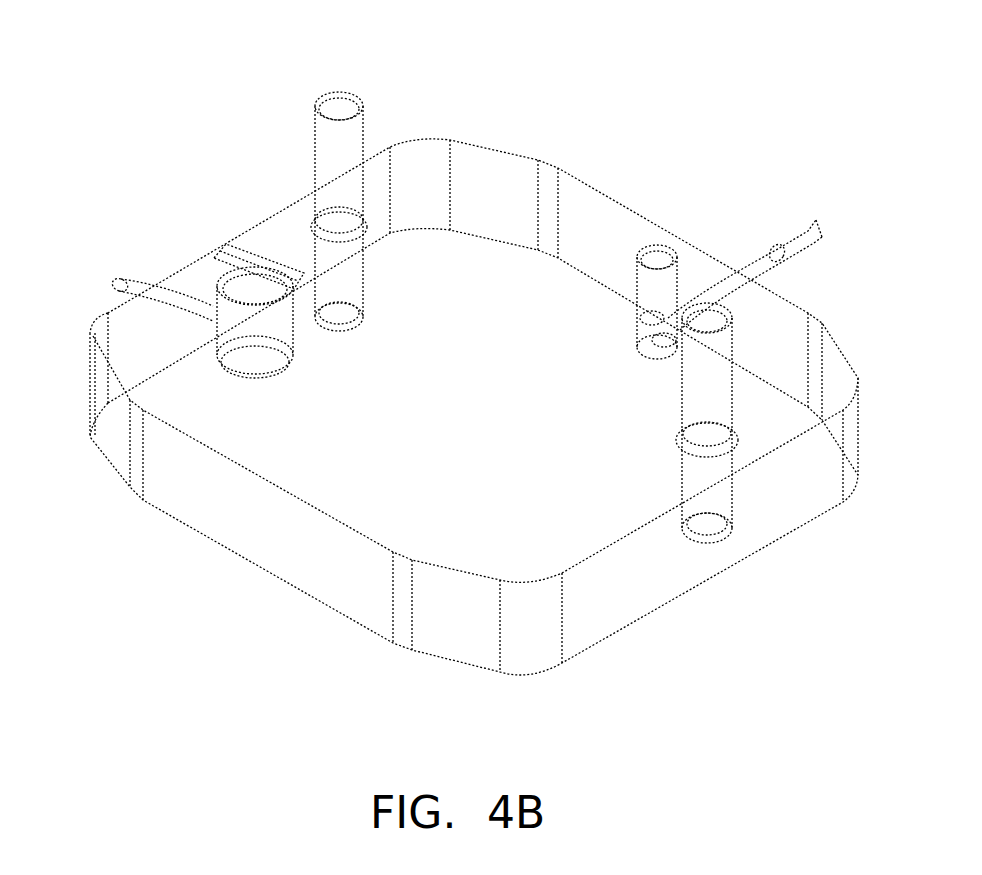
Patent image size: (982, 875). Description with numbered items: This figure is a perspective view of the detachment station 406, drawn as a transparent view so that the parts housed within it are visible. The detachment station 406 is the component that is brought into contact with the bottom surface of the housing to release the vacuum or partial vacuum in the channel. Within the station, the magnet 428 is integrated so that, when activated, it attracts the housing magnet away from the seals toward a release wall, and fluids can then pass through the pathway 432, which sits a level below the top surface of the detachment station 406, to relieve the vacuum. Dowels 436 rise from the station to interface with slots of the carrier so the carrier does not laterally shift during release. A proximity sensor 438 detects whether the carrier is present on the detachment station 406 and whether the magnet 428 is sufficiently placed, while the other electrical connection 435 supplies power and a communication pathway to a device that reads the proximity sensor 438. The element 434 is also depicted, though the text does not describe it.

The detachment station 406 is at (78, 136).
The magnet 428 is at (219, 283).
The pathway 432 is at (238, 250).
The tube 434 is at (128, 283).
The other electrical connection 435 is at (820, 233).
The dowels 436 is at (318, 103).
The proximity sensor 438 is at (675, 262).